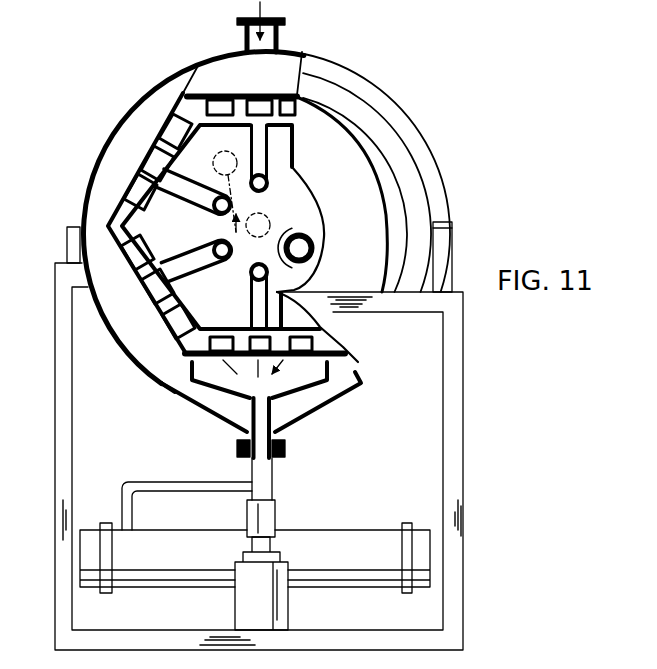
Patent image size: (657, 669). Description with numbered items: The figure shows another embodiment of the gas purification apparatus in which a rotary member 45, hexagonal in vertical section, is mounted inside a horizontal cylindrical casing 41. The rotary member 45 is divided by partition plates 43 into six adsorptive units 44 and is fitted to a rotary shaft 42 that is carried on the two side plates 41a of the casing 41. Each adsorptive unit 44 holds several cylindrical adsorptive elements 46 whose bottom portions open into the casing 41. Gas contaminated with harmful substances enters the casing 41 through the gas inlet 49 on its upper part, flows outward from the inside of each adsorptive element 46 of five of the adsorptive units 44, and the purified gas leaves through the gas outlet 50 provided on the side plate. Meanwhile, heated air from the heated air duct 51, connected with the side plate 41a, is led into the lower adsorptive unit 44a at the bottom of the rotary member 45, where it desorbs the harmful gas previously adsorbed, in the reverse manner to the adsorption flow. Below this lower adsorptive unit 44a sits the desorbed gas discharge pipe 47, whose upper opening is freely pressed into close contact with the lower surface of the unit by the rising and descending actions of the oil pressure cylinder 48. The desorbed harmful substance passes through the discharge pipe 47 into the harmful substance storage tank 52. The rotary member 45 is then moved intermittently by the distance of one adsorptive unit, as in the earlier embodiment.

The horizontal cylindrical casing 41 is at (89, 176).
The side plate 41a is at (413, 180).
The rotary shaft 42 is at (236, 228).
The partition plate 43 is at (193, 90).
The adsorptive unit 44 is at (164, 145).
The lower adsorptive unit 44a is at (240, 340).
The rotary member 45 is at (176, 87).
The cylindrical adsorptive element 46 is at (219, 92).
The desorbed gas discharge pipe 47 is at (297, 423).
The oil pressure cylinder 48 is at (276, 516).
The gas inlet 49 is at (279, 36).
The gas outlet 50 is at (244, 163).
The heated air duct 51 is at (314, 240).
The harmful substance storage tank 52 is at (358, 530).